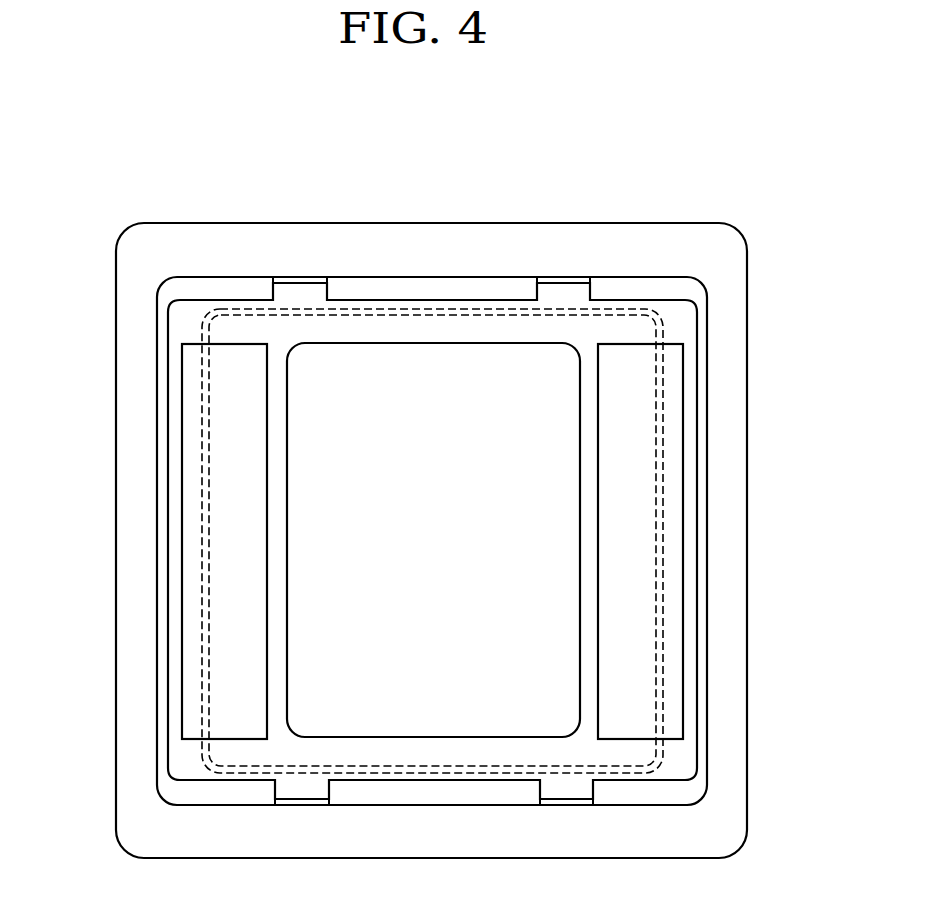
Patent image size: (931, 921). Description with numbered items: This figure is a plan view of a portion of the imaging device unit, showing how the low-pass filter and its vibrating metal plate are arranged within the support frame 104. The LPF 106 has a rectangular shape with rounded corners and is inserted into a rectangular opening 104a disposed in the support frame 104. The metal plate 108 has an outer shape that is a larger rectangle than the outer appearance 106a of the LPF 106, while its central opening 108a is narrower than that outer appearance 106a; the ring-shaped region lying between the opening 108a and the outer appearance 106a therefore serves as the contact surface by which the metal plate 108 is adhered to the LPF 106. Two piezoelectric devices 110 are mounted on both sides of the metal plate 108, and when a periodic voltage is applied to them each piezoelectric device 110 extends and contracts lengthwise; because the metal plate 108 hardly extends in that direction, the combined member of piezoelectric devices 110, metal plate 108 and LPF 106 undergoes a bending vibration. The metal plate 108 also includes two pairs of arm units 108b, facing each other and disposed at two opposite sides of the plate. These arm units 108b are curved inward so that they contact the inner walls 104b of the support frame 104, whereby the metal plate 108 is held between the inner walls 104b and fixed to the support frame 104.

The support frame 104 is at (435, 840).
The rectangular opening 104a is at (347, 308).
The inner wall 104b is at (238, 281).
The LPF 106 is at (449, 310).
The outer appearance of the LPF 106a is at (397, 313).
The metal plate 108 is at (670, 303).
The opening 108a is at (510, 347).
The arm unit 108b is at (310, 285).
The piezoelectric device 110 is at (198, 541).